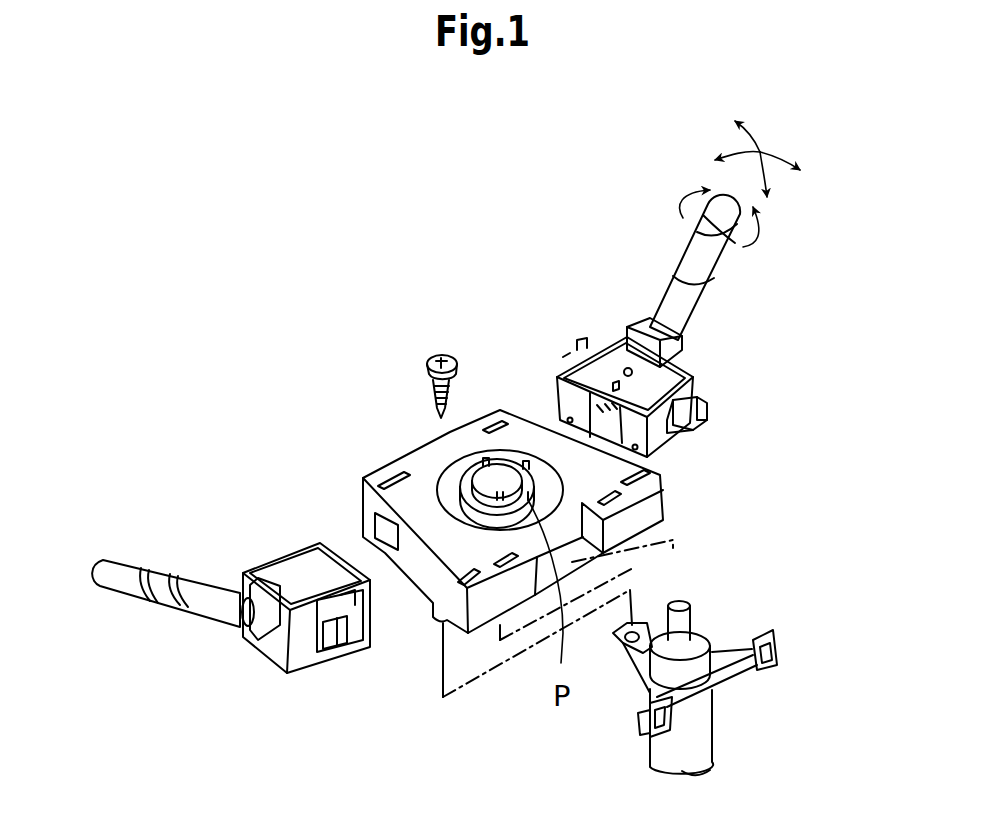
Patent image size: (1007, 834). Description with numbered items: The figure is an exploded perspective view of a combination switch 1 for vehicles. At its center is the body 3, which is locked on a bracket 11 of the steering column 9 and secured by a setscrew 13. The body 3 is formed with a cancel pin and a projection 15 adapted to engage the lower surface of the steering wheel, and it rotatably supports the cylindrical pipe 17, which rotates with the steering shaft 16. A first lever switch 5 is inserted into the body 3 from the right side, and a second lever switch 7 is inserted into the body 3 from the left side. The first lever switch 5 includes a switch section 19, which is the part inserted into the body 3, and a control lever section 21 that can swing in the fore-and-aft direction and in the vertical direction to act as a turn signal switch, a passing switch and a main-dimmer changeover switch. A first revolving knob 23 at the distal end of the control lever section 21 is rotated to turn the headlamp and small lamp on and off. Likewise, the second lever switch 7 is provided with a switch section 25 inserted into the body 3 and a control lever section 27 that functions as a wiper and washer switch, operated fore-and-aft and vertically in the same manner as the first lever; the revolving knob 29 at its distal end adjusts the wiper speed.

The combination switch 1 is at (493, 207).
The body 3 is at (492, 465).
The first lever switch 5 is at (706, 272).
The second lever switch 7 is at (206, 619).
The steering column 9 is at (704, 642).
The bracket 11 is at (712, 640).
The setscrew 13 is at (428, 355).
The projection 15 is at (447, 455).
The steering shaft 16 is at (680, 601).
The cylindrical pipe 17 is at (440, 466).
The switch section 19 is at (702, 381).
The control lever section 21 is at (714, 281).
The first revolving knob 23 is at (690, 243).
The switch section 25 is at (307, 673).
The control lever section 27 is at (141, 538).
The revolving knob 29 is at (117, 560).